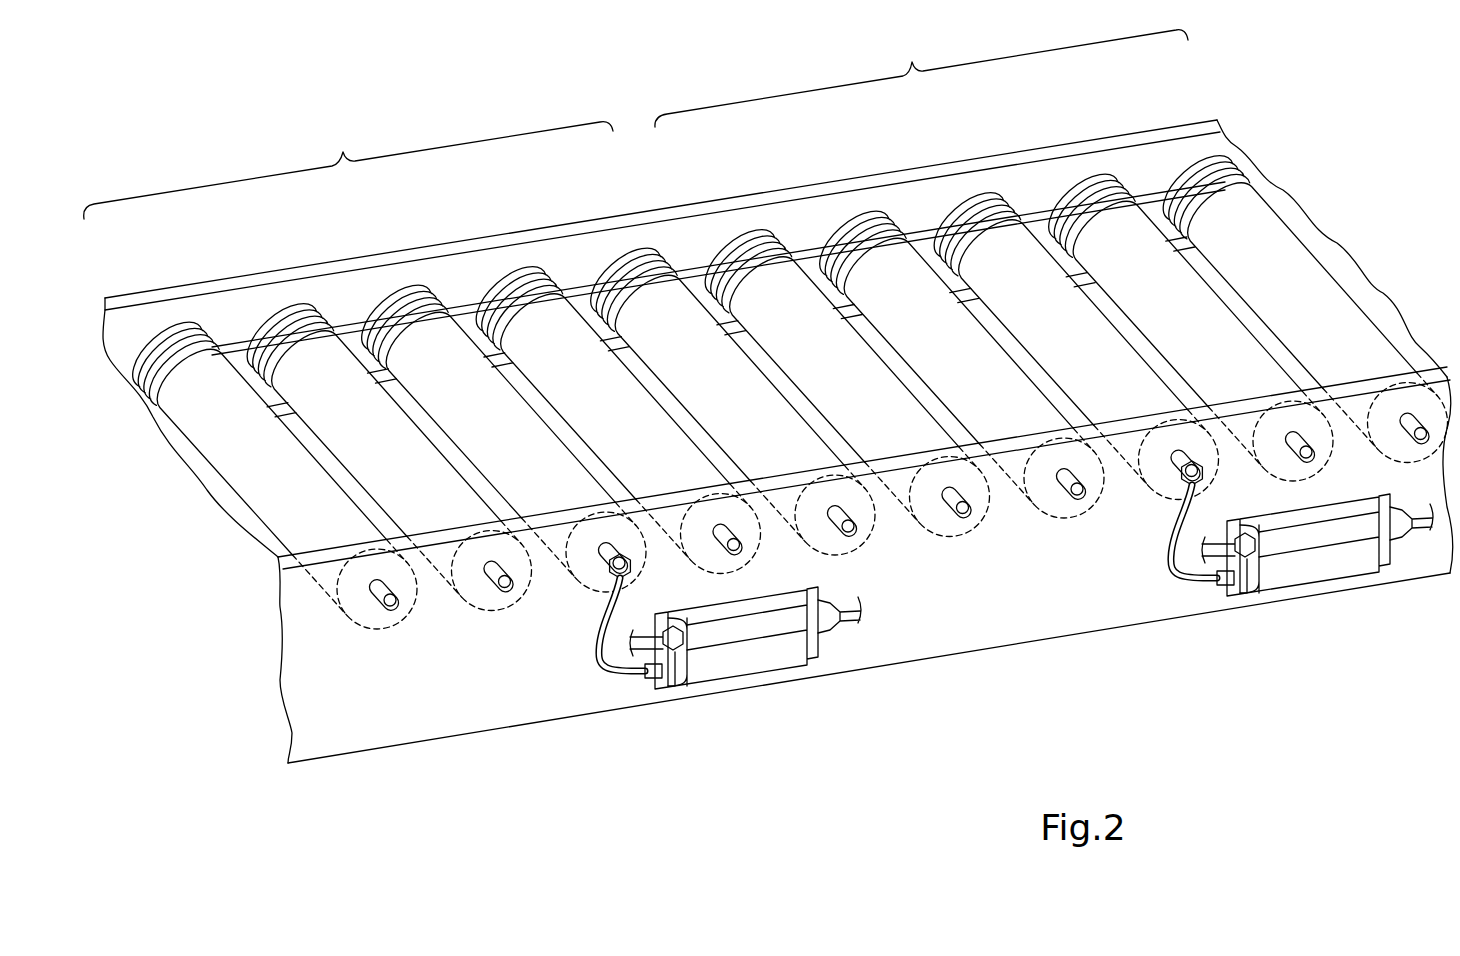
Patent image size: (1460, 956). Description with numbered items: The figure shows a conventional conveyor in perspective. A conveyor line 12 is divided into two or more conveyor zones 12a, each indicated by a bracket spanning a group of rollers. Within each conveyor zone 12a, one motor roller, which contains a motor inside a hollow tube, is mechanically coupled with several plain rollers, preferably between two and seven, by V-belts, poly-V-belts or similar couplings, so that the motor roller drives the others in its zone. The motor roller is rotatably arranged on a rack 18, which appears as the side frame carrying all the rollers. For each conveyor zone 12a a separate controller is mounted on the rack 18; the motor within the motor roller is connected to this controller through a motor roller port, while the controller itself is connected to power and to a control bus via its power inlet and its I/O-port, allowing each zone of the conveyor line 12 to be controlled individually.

The conveyor line 12 is at (1362, 197).
The conveyor zone 12a is at (636, 124).
The rack 18 is at (467, 712).